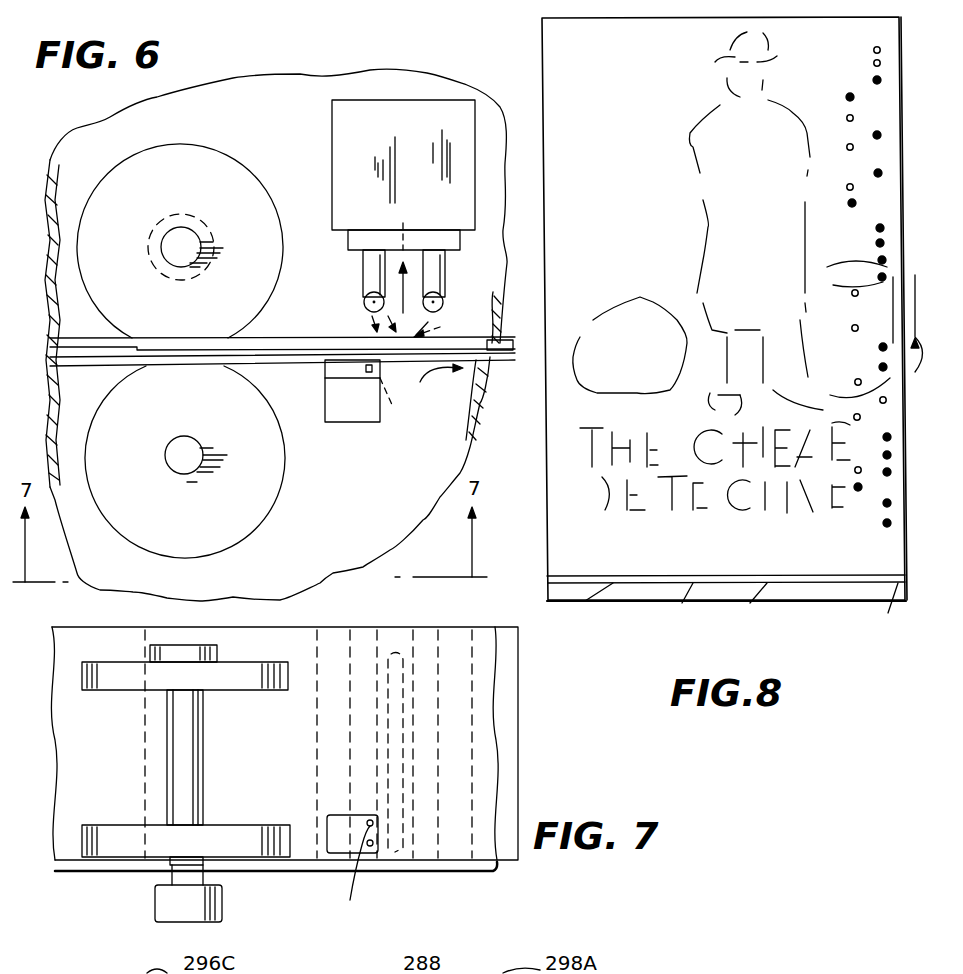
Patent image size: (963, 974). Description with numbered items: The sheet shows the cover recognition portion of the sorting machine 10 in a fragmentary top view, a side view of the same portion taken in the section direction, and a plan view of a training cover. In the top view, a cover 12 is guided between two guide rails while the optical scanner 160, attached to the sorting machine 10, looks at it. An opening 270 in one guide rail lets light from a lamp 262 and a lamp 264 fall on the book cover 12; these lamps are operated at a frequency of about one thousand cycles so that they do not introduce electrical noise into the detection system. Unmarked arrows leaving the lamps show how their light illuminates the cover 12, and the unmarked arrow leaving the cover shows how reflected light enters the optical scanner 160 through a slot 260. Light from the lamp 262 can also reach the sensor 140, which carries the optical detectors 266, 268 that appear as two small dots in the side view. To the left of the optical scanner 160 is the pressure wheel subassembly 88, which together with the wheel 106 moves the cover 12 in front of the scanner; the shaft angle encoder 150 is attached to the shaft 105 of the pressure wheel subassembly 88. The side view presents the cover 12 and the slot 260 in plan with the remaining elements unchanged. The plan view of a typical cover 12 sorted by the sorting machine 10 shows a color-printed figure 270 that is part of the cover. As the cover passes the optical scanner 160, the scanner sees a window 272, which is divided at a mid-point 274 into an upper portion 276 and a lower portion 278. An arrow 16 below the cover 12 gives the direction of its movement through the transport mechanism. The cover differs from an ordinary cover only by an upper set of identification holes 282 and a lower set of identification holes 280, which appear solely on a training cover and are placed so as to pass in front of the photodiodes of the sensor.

In FIG. 6, the sorting machine 10 is at (406, 62).
In FIG. 7, the sorting machine 10 is at (320, 902).
In FIG. 6, the cover 12 is at (508, 343).
In FIG. 7, the cover 12 is at (507, 698).
In FIG. 8, the cover 12 is at (555, 62).
In FIG. 6, the arrow 16 is at (441, 381).
In FIG. 8, the arrow 16 is at (915, 335).
In FIG. 6, the pressure wheel subassembly 88 is at (187, 157).
In FIG. 6, the shaft 105 is at (187, 243).
In FIG. 6, the wheel 106 is at (270, 493).
In FIG. 7, the wheel 106 is at (218, 692).
In FIG. 6, the sensor 140 is at (352, 412).
In FIG. 7, the sensor 140 is at (328, 867).
In FIG. 6, the shaft angle encoder 150 is at (152, 233).
In FIG. 7, the shaft angle encoder 150 is at (158, 903).
In FIG. 6, the optical scanner 160 is at (340, 165).
In FIG. 7, the optical scanner 160 is at (452, 640).
In FIG. 6, the slot 260 is at (403, 230).
In FIG. 7, the slot 260 is at (425, 872).
In FIG. 6, the lamp 262 is at (365, 302).
In FIG. 7, the lamp 262 is at (352, 640).
In FIG. 7, the lamp 264 is at (420, 640).
In FIG. 6, the electrical cable 266 is at (402, 410).
In FIG. 7, the electrical cable 266 is at (370, 878).
In FIG. 6, the optical detector 268 is at (437, 302).
In FIG. 7, the optical detector 268 is at (370, 847).
In FIG. 6, the opening 270 is at (449, 324).
In FIG. 8, the opening 270 is at (717, 263).
In FIG. 8, the window 272 is at (868, 610).
In FIG. 8, the mid-point 274 is at (682, 603).
In FIG. 8, the upper portion 276 is at (585, 601).
In FIG. 8, the lower portion 278 is at (750, 603).
In FIG. 8, the lower set of identification holes 280 is at (874, 50).
In FIG. 8, the upper set of identification holes 282 is at (848, 95).